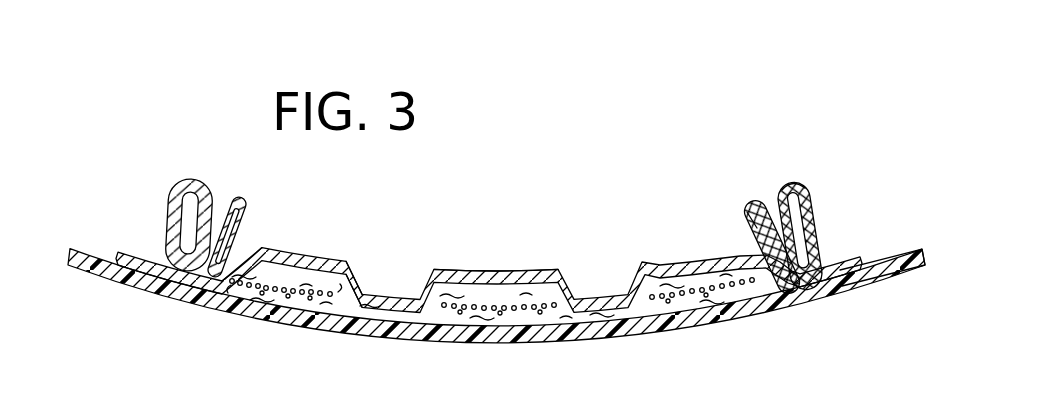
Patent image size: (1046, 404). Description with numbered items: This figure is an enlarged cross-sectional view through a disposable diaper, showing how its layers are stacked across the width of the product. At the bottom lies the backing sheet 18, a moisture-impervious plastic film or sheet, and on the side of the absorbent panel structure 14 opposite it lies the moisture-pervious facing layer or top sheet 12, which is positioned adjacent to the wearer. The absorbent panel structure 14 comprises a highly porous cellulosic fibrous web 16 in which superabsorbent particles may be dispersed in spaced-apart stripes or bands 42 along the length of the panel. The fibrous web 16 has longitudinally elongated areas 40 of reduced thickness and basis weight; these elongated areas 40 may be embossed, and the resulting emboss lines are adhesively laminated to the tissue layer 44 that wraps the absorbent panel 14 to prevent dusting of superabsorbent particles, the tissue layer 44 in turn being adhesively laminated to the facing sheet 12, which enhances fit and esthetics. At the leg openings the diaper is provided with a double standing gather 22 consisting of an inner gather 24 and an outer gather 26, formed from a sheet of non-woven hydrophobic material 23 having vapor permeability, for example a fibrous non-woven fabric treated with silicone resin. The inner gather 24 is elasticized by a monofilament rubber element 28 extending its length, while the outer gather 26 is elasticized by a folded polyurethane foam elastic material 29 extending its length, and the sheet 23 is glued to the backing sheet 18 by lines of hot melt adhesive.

The facing layer or top sheet 12 is at (549, 273).
The absorbent panel structure 14 is at (338, 308).
The cellulosic fibrous web 16 is at (233, 267).
The backing sheet 18 is at (503, 344).
The double standing gather 22 is at (768, 214).
The sheet of non-woven hydrophobic material 23 is at (859, 263).
The inner gather 24 is at (753, 232).
The outer gather 26 is at (819, 221).
The monofilament rubber element 28 is at (743, 214).
The folded polyurethane foam elastic material 29 is at (805, 188).
The elongated area of reduced thickness 40 is at (383, 313).
The superabsorbent stripes or bands 42 is at (300, 293).
The tissue layer 44 is at (476, 283).